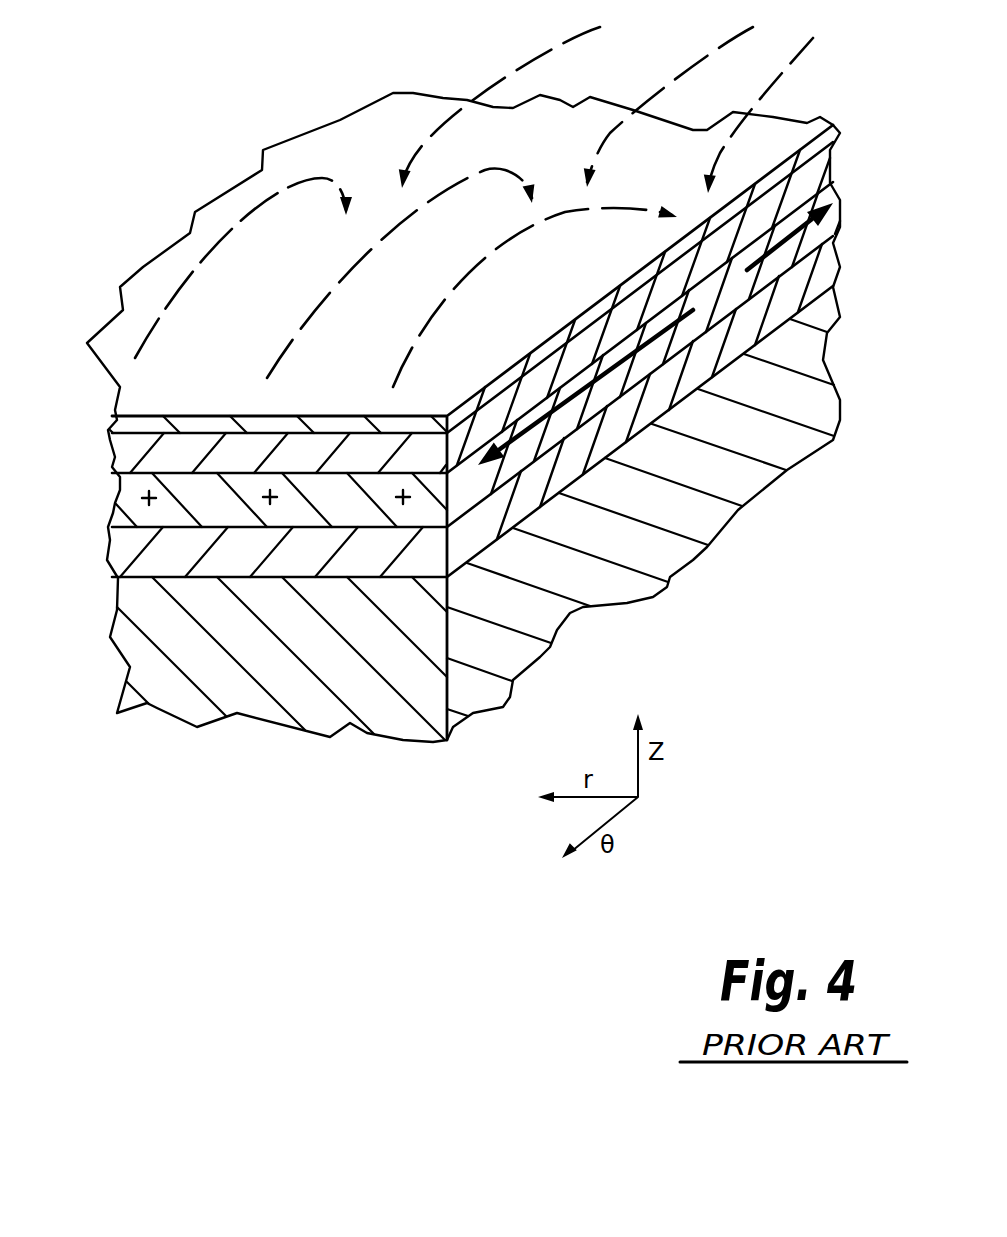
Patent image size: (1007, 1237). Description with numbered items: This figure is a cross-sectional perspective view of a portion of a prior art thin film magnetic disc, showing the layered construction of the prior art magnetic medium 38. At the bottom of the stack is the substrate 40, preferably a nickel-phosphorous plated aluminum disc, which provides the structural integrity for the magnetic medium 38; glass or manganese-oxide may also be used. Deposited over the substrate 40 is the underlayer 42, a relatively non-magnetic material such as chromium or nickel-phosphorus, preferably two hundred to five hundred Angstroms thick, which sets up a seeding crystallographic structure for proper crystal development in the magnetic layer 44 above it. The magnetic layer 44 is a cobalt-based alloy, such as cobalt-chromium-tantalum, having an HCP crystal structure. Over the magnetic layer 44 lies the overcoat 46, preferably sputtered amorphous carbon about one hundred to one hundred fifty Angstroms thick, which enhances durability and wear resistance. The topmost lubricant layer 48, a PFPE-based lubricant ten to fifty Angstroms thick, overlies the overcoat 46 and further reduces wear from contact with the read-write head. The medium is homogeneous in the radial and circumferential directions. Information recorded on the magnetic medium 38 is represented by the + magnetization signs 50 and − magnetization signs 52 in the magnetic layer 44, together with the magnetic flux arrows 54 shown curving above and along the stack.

The magnetic medium 38 is at (223, 137).
The substrate 40 is at (180, 703).
The underlayer 42 is at (113, 545).
The magnetic layer 44 is at (113, 497).
The overcoat 46 is at (108, 457).
The lubricant layer 48 is at (113, 430).
The + magnetization signs 50 is at (149, 490).
The − magnetization signs 52 is at (720, 292).
The magnetic flux arrows 54 is at (687, 67).